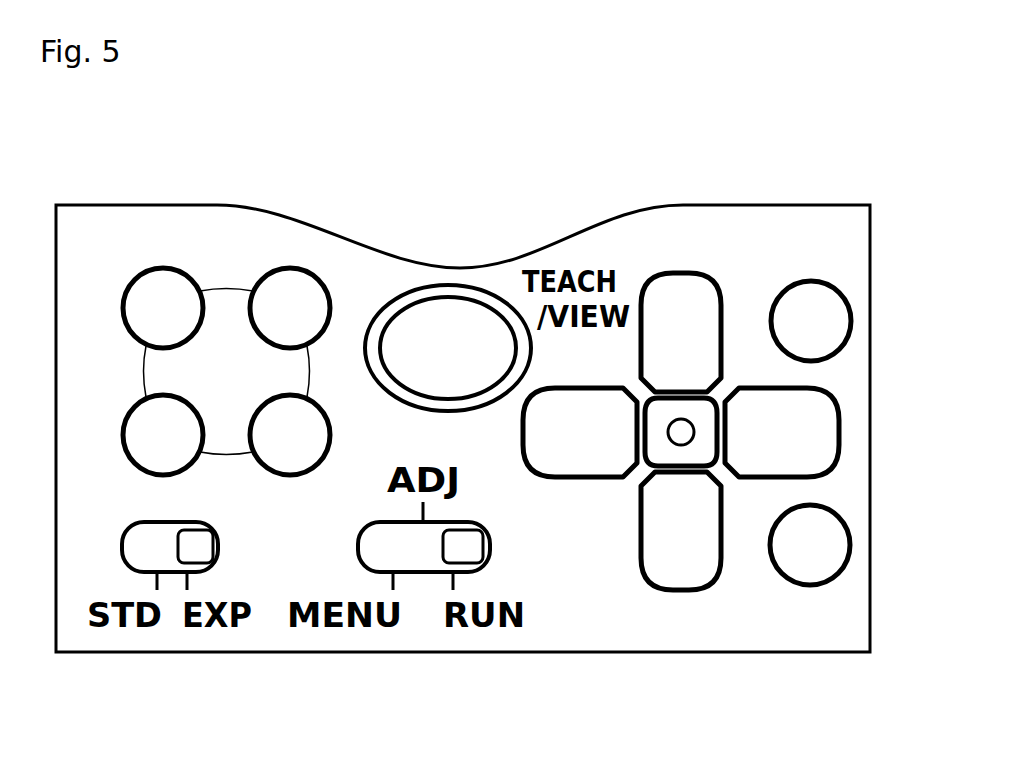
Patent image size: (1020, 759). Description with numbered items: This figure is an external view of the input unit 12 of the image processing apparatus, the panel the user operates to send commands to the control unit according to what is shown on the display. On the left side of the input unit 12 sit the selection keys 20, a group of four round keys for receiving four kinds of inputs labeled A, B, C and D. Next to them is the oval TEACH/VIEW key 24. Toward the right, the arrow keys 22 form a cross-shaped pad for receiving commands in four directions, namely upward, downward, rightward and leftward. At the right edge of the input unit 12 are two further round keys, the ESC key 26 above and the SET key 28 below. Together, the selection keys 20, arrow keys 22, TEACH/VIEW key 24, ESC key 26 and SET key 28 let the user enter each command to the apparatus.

The input unit 12 is at (918, 143).
The selection keys 20 is at (352, 250).
The arrow keys 22 is at (605, 510).
The TEACH/VIEW key 24 is at (447, 310).
The ESC key 26 is at (832, 321).
The SET key 28 is at (832, 546).